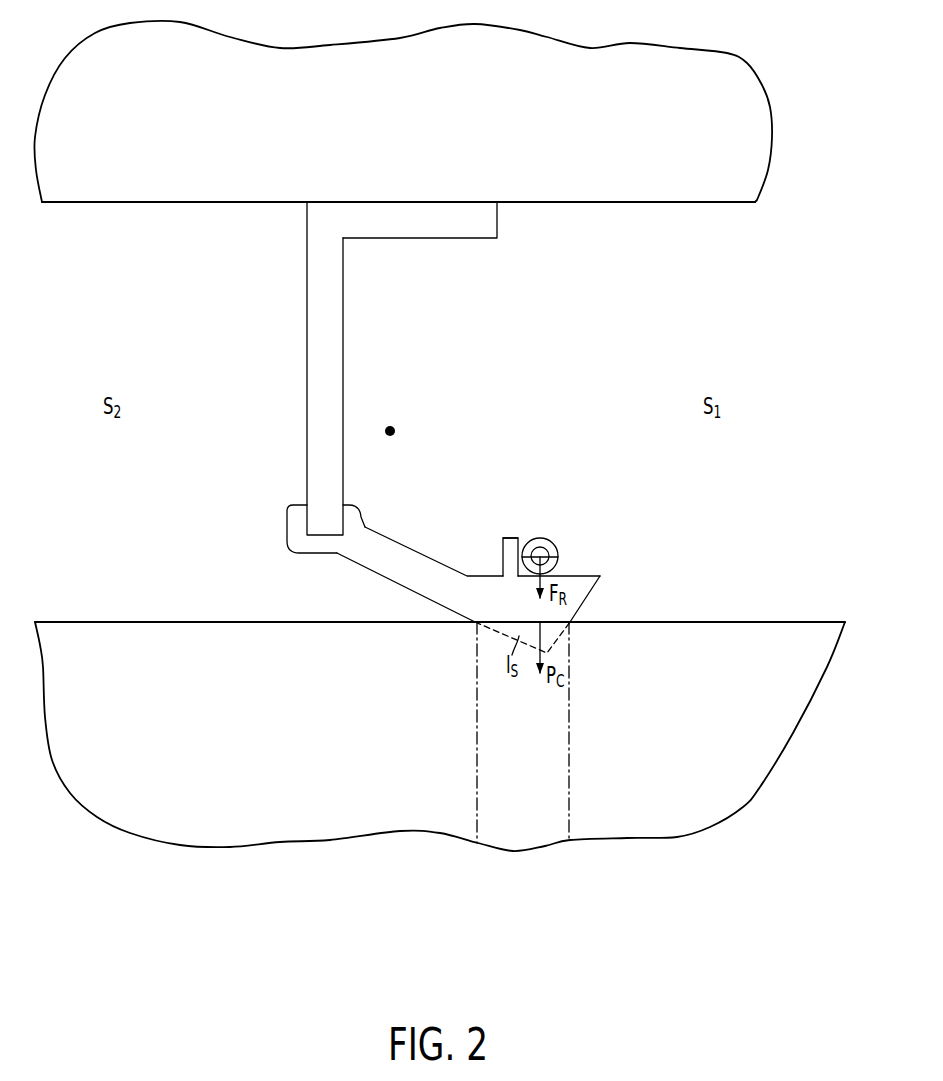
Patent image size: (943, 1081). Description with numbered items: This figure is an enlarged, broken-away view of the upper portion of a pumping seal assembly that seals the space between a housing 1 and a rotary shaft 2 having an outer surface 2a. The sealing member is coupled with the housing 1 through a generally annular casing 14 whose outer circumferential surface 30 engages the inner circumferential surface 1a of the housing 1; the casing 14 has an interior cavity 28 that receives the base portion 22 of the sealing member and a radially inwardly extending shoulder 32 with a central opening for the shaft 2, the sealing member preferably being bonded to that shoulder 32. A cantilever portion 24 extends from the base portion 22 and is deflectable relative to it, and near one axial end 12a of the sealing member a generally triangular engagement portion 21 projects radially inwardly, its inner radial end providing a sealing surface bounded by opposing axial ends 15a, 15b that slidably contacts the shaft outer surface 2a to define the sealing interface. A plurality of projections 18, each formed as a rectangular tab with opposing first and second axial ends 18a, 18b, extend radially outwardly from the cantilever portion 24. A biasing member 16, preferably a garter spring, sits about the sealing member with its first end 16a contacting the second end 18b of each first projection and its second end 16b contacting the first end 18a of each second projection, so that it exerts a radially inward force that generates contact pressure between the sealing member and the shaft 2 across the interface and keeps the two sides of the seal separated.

The housing 1 is at (403, 134).
The inner circumferential surface of the housing 1a is at (398, 230).
The rotary shaft 2 is at (440, 659).
The outer surface of the shaft 2a is at (440, 595).
The axial end of the sealing member 12a is at (620, 599).
The casing 14 is at (458, 494).
The first axial end of the sealing surface 15a is at (451, 731).
The second axial end of the sealing surface 15b is at (601, 716).
The biasing member 16 is at (540, 519).
The first end of the biasing member 16a is at (483, 553).
The second end of the biasing member 16b is at (573, 552).
The projections 18 is at (502, 492).
The first axial end of the projection 18a is at (482, 510).
The second axial end of the projection 18b is at (539, 523).
The engagement portion 21 is at (420, 587).
The base portion 22 is at (305, 536).
The cantilever portion 24 is at (482, 537).
The interior cavity of the casing 28 is at (417, 420).
The outer circumferential surface of the casing 30 is at (420, 192).
The shoulder of the casing 32 is at (304, 368).